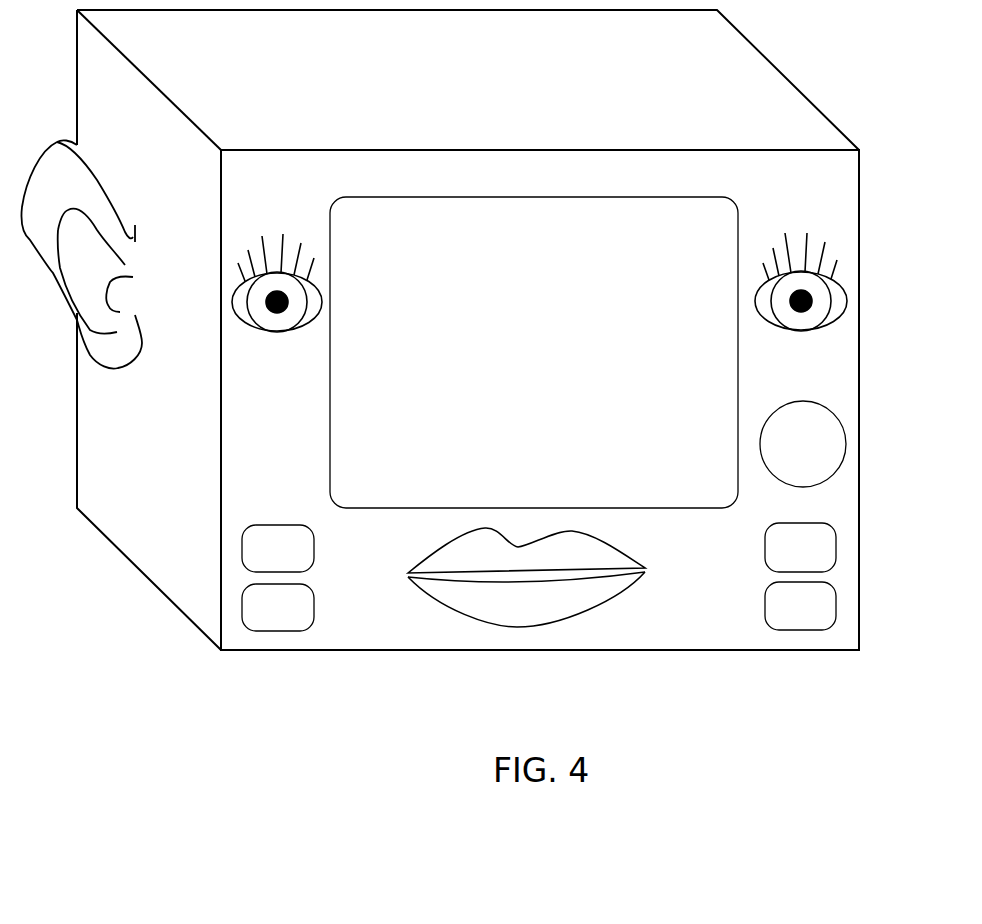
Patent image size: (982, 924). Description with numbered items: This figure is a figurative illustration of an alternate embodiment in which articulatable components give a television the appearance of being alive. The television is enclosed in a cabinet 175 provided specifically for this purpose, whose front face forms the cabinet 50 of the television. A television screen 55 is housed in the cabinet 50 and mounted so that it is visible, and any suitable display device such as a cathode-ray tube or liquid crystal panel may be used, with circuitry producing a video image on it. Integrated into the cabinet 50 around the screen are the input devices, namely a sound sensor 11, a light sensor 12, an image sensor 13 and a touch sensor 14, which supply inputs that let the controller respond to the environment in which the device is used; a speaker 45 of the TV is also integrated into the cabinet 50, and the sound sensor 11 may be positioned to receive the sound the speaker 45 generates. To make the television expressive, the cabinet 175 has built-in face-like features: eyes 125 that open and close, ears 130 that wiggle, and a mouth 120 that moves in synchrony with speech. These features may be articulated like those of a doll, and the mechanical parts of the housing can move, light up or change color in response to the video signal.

The sound sensor 11 is at (265, 563).
The light sensor 12 is at (787, 562).
The image sensor 13 is at (265, 622).
The touch sensor 14 is at (787, 621).
The speaker 45 is at (789, 459).
The cabinet 50 is at (254, 185).
The television screen 55 is at (364, 233).
The mouth 120 is at (568, 648).
The eyes 125 is at (253, 362).
The ears 130 is at (128, 166).
The cabinet 175 is at (166, 642).